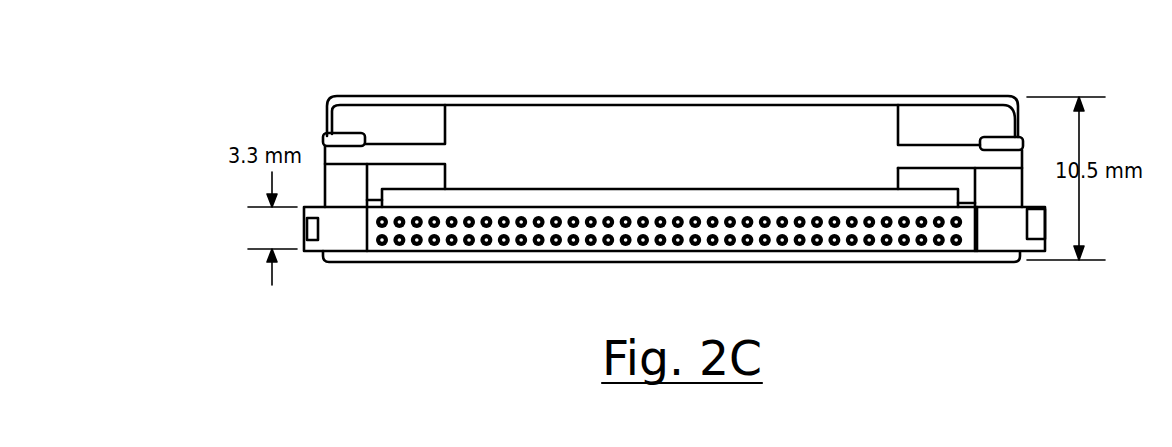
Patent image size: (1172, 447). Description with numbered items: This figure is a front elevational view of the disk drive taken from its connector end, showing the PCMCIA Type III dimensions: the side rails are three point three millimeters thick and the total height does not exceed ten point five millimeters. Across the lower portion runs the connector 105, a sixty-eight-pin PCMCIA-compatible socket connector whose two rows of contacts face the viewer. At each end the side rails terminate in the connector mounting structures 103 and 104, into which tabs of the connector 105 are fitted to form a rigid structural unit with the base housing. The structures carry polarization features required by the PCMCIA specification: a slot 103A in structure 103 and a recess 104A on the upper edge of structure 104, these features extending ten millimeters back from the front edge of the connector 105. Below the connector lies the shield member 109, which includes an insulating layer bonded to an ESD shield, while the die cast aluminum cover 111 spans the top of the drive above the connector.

The connector mounting structure 103 is at (315, 252).
The slot 103A is at (308, 207).
The connector mounting structure 104 is at (1047, 247).
The right latch / guide portion 104A is at (1033, 223).
The connector 105 is at (863, 245).
The shield member 109 is at (403, 263).
The cover 111 is at (720, 96).